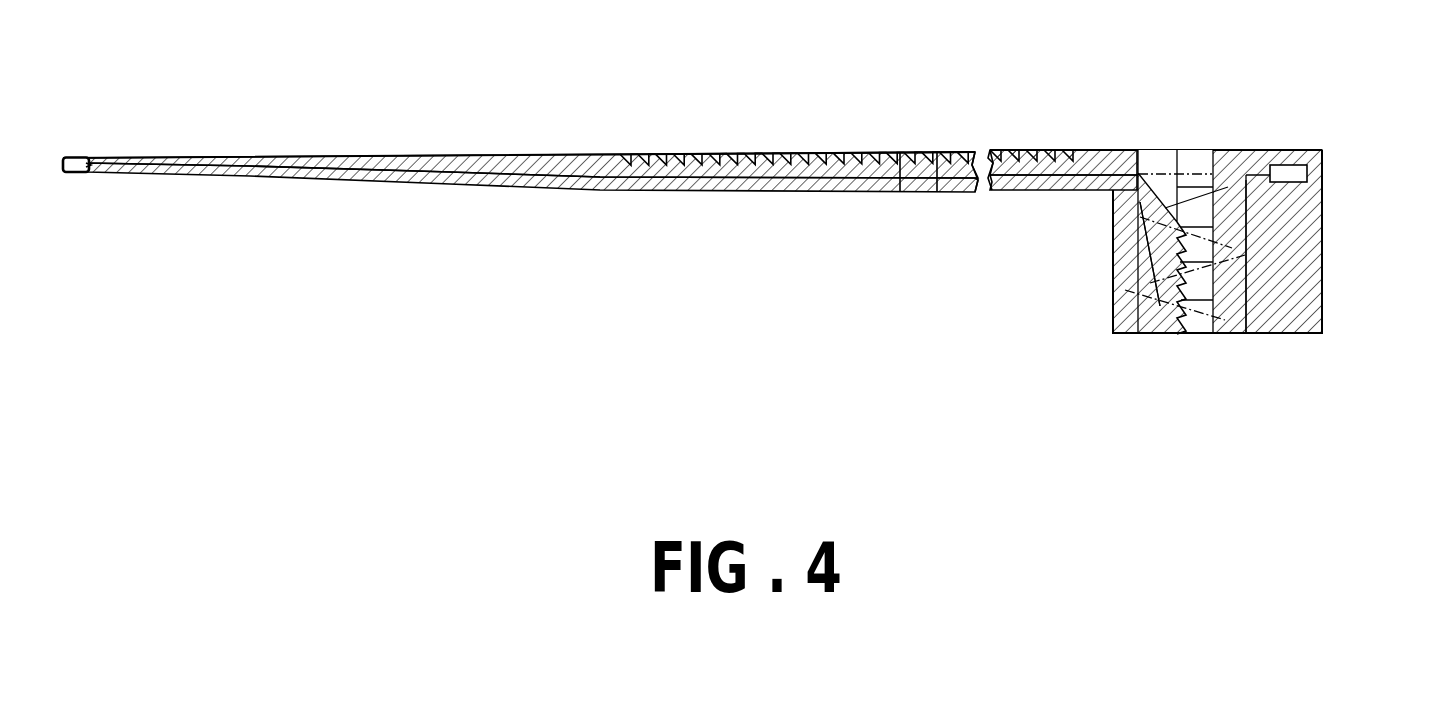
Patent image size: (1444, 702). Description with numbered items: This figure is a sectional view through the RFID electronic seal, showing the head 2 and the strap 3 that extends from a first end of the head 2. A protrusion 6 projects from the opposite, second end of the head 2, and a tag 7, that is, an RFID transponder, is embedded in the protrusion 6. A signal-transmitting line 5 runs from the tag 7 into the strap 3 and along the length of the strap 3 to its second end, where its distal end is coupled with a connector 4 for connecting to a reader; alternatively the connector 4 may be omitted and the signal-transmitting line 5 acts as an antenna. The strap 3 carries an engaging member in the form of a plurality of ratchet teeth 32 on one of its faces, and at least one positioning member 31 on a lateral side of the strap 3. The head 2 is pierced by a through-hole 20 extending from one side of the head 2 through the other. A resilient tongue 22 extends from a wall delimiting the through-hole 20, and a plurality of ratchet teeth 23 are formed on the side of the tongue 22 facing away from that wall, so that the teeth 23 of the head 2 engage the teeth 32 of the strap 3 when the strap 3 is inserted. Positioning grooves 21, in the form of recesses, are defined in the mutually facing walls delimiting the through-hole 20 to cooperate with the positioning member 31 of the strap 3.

The head 2 is at (1113, 277).
The strap 3 is at (732, 192).
The connector 4 is at (75, 157).
The signal-transmitting line 5 is at (432, 168).
The protrusion 6 is at (1305, 260).
The tag 7 is at (1285, 172).
The through-hole 20 is at (1195, 160).
The positioning groove 21 is at (1200, 203).
The resilient tongue 22 is at (1160, 306).
The teeth 23 is at (1183, 293).
The positioning member 31 is at (888, 178).
The teeth 32 is at (788, 152).